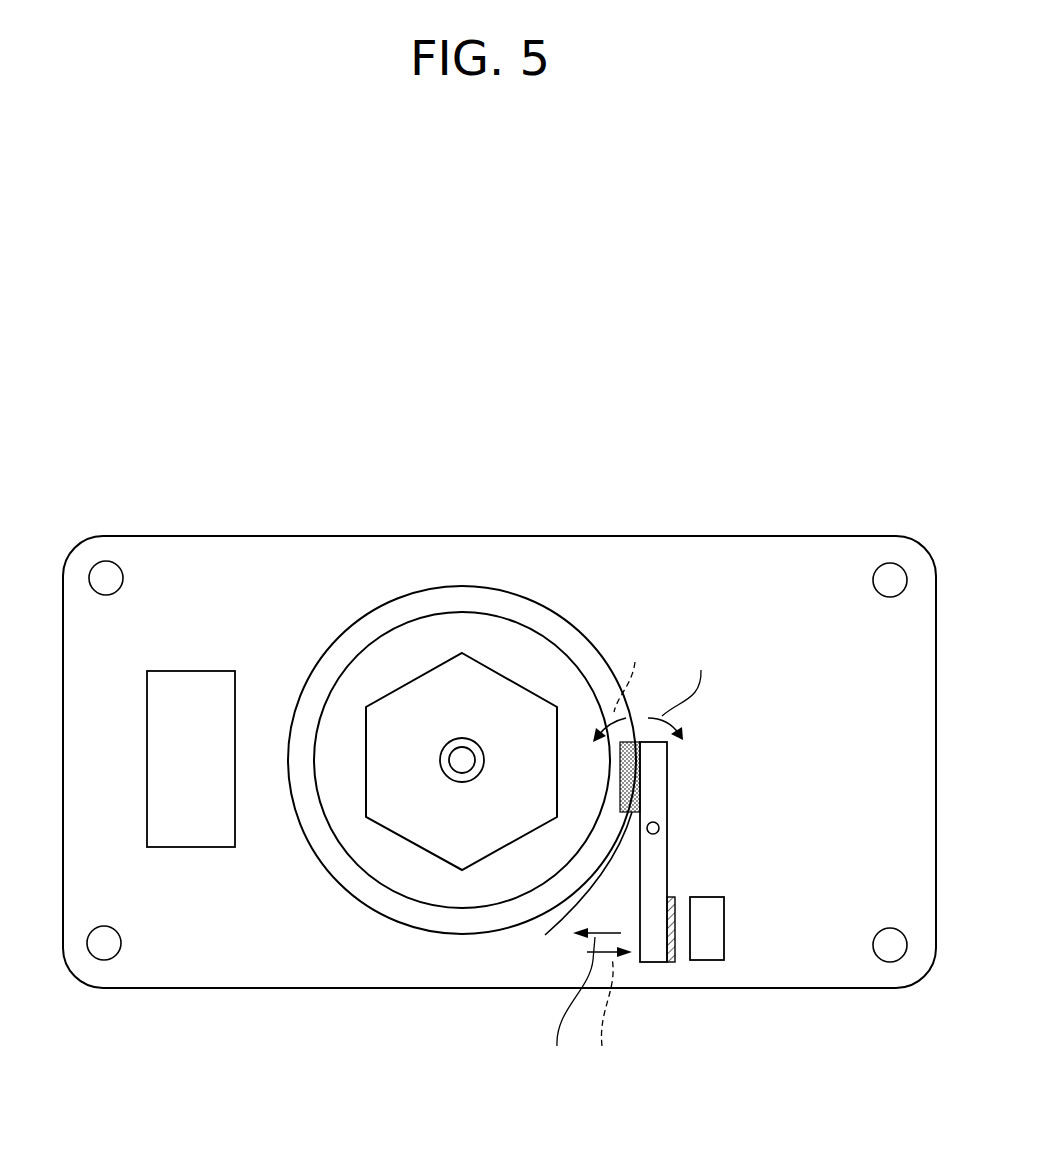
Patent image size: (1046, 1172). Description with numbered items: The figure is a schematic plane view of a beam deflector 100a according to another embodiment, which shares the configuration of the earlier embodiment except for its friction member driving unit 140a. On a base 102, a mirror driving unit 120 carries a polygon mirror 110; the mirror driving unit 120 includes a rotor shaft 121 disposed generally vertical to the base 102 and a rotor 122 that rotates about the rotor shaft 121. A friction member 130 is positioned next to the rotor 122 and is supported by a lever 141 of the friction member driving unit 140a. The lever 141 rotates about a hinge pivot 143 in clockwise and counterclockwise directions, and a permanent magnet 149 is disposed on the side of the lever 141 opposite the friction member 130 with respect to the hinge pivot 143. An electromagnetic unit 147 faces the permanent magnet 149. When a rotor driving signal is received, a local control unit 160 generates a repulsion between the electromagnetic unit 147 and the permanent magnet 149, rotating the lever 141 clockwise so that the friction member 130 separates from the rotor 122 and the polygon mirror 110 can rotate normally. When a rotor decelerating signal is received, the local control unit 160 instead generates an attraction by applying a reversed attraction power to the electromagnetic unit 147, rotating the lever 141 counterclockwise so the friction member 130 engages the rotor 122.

The beam deflector 100a is at (735, 514).
The base 102 is at (267, 943).
The polygon mirror 110 is at (403, 714).
The mirror driving unit 120 is at (385, 937).
The rotor shaft 121 is at (462, 762).
The rotor 122 is at (565, 646).
The friction member 130 is at (545, 935).
The friction member driving unit 140a is at (724, 972).
The lever 141 is at (653, 870).
The hinge pivot 143 is at (659, 828).
The electromagnetic unit 147 is at (711, 930).
The permanent magnet 149 is at (670, 964).
The local control unit 160 is at (185, 830).